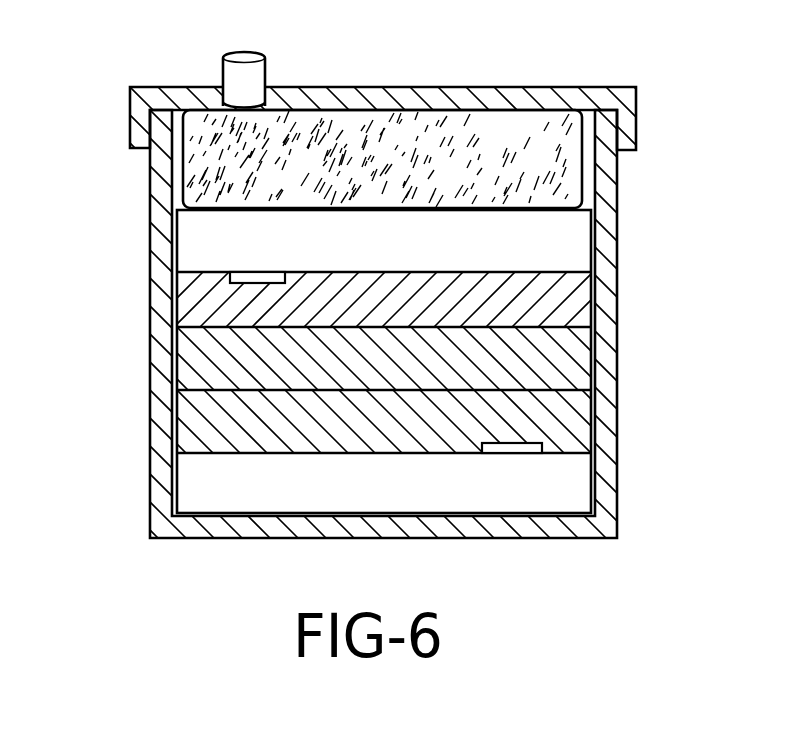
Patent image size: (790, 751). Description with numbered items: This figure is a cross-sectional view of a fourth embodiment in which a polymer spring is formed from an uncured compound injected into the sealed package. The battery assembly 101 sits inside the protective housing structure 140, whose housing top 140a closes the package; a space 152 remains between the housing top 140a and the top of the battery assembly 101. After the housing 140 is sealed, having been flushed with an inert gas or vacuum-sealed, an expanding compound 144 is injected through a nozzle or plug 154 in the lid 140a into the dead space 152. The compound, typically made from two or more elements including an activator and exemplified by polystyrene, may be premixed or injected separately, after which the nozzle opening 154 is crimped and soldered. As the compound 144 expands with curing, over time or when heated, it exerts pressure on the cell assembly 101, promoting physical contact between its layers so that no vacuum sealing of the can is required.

The battery assembly 101 is at (178, 421).
The protective housing structure 140 is at (618, 467).
The housing top 140a is at (513, 87).
The expanding compound 144 is at (582, 173).
The space 152 is at (177, 196).
The nozzle or plug 154 is at (247, 64).